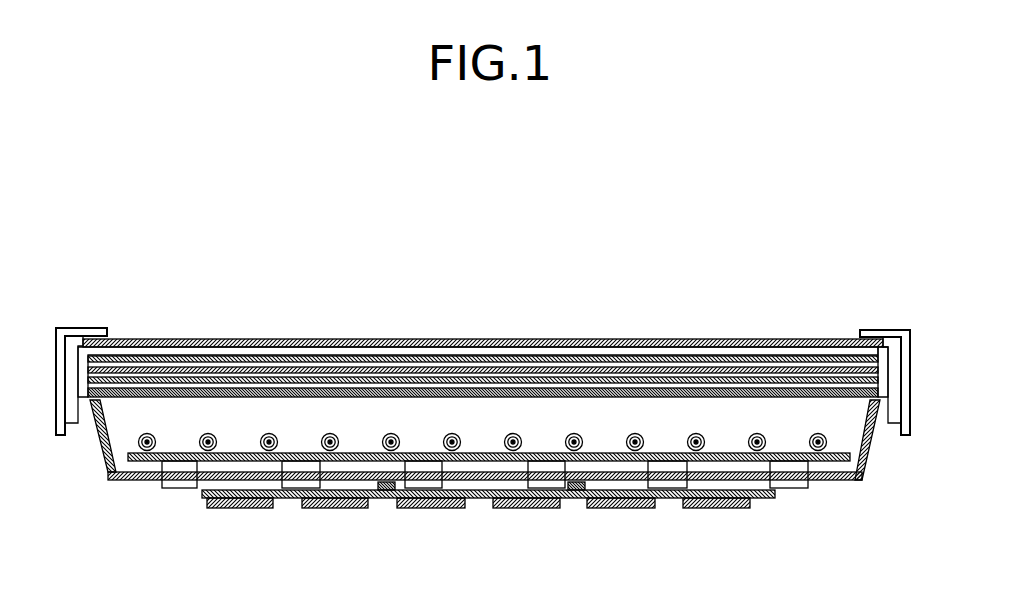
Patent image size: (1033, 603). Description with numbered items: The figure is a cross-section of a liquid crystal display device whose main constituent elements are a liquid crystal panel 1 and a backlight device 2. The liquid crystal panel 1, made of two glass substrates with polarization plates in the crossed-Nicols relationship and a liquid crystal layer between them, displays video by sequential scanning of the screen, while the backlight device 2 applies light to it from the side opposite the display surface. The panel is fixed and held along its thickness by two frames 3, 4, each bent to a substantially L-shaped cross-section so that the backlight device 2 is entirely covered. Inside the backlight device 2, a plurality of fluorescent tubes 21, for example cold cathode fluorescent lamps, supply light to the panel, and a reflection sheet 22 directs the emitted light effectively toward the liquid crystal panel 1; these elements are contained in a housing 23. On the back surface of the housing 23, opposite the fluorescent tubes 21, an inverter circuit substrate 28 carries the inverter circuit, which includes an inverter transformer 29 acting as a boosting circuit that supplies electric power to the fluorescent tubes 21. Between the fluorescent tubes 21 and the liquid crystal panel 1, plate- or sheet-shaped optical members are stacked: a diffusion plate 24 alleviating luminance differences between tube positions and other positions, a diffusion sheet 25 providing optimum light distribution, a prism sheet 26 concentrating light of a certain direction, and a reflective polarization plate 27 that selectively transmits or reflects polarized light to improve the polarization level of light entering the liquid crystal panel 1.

The liquid crystal panel 1 is at (713, 340).
The backlight device 2 is at (878, 503).
The frame 3 is at (80, 328).
The frame 4 is at (75, 423).
The fluorescent tubes 21 is at (139, 443).
The reflection sheet 22 is at (218, 502).
The housing 23 is at (832, 484).
The diffusion plate 24 is at (786, 396).
The diffusion sheet 25 is at (622, 376).
The prism sheet 26 is at (548, 370).
The reflective polarization plate 27 is at (477, 352).
The inverter circuit substrate 28 is at (672, 503).
The inverter transformer 29 is at (522, 500).